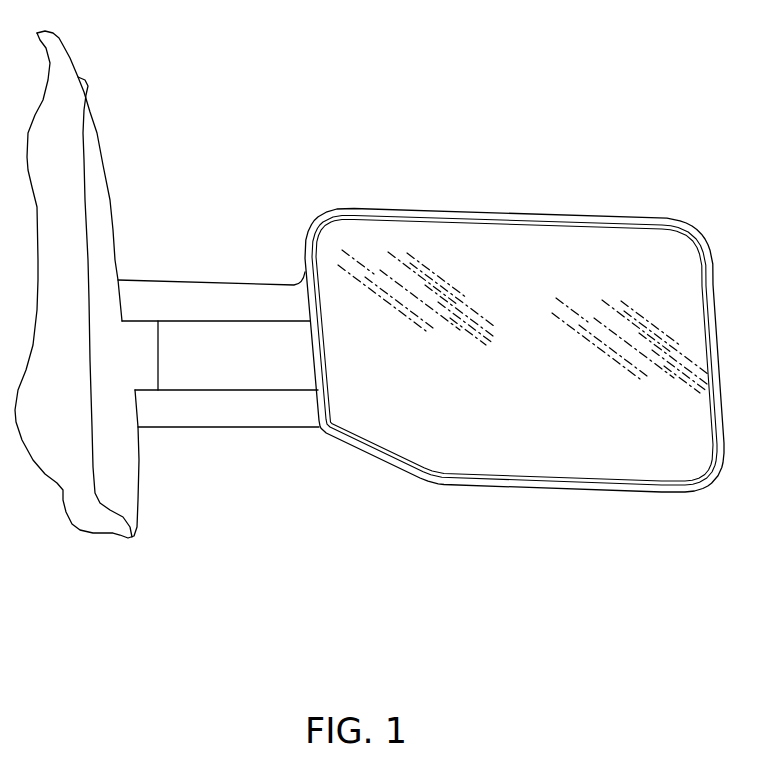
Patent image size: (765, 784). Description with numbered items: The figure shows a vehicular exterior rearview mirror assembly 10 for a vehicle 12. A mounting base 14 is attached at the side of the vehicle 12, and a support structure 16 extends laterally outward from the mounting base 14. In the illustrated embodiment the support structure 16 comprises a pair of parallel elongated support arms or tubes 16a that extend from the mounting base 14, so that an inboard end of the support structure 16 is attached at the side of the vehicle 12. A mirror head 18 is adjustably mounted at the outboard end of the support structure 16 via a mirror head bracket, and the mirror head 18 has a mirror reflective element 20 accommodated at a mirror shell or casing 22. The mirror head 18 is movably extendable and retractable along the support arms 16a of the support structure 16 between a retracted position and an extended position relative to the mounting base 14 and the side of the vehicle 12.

The vehicular exterior rearview mirror assembly 10 is at (454, 115).
The vehicle 12 is at (65, 57).
The mounting base 14 is at (108, 208).
The support structure 16 is at (181, 263).
The support arms 16a is at (207, 312).
The mirror head 18 is at (492, 195).
The mirror reflective element 20 is at (392, 232).
The mirror shell or casing 22 is at (618, 216).